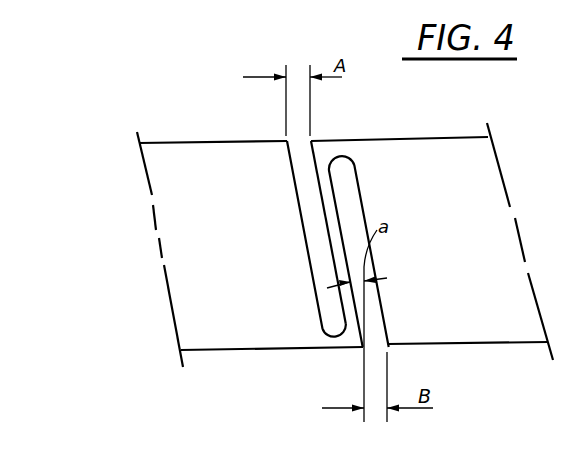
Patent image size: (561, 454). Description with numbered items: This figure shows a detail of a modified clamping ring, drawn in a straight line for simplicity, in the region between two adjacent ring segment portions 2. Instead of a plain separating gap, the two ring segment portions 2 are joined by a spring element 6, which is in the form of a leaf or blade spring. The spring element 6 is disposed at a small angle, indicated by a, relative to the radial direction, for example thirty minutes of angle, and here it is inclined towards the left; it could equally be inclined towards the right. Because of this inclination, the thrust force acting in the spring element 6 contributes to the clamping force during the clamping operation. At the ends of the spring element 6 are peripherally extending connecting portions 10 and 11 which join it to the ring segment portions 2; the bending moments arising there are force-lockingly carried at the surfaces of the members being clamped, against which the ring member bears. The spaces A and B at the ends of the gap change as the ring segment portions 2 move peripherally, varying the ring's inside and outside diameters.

The ring segment portion 2 is at (247, 265).
The spring element 6 is at (328, 208).
The connecting portion 10 is at (340, 342).
The connecting portion 11 is at (330, 147).